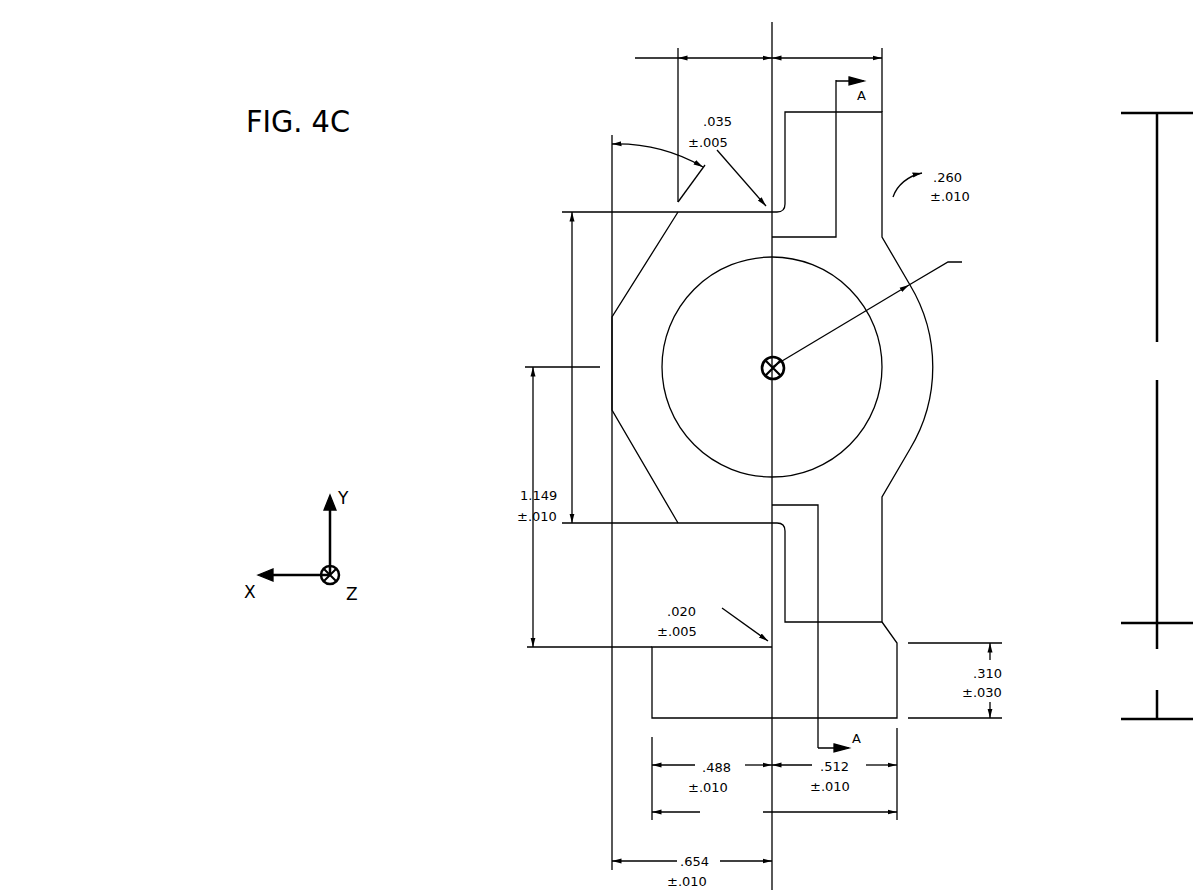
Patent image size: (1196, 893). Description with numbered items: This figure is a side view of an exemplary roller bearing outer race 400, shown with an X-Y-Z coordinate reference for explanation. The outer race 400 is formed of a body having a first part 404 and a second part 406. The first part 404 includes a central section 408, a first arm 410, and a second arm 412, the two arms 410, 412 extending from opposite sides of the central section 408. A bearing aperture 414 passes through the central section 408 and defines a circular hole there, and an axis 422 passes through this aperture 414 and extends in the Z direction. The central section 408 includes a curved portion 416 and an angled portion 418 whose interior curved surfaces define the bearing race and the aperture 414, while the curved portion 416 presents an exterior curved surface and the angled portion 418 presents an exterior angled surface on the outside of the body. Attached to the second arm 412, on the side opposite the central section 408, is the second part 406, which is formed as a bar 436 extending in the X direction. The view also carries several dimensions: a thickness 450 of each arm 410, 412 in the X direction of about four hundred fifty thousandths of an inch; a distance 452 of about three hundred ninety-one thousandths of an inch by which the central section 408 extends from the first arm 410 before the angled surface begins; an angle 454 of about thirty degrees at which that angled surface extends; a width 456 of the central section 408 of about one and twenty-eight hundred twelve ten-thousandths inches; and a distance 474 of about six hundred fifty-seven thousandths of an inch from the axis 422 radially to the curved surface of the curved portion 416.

The roller bearing outer race 400 is at (401, 322).
The first part 404 is at (1157, 368).
The second part 406 is at (1157, 671).
The central section 408 is at (922, 400).
The first arm 410 is at (868, 152).
The second arm 412 is at (867, 573).
The bearing aperture 414 is at (738, 342).
The curved portion 416 is at (912, 364).
The angled portion 418 is at (622, 357).
The axis 422 is at (768, 377).
The bar 436 is at (667, 690).
The thickness 450 is at (827, 56).
The distance 452 is at (718, 57).
The angle 454 is at (653, 149).
The width 456 is at (572, 243).
The distance 474 is at (840, 330).